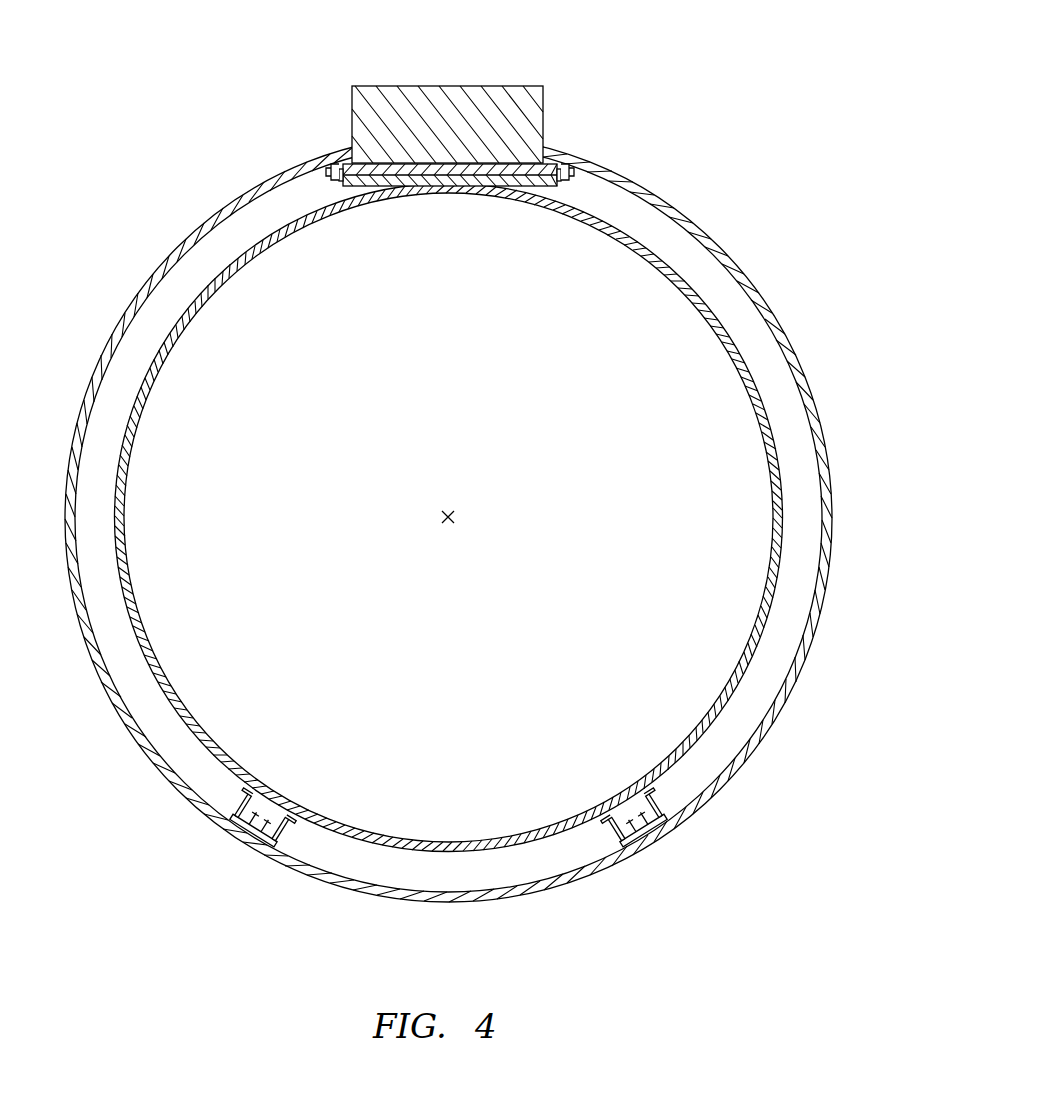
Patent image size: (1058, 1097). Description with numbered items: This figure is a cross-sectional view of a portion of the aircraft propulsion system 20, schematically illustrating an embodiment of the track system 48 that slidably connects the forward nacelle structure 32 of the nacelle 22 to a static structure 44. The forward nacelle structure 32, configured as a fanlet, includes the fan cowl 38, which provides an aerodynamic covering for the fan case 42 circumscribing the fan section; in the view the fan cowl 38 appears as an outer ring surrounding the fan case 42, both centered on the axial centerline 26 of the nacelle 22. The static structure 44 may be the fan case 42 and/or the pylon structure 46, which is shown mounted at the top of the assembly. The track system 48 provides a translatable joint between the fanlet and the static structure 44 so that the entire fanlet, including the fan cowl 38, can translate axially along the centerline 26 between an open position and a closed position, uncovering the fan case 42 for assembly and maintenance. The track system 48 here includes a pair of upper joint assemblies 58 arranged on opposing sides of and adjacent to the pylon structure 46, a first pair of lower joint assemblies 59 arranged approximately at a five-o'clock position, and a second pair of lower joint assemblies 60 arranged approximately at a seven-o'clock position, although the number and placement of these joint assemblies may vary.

The propulsion system 20 is at (686, 105).
The nacelle 22 is at (449, 518).
The forward nacelle structure 32 is at (449, 518).
The fan cowl 38 is at (768, 304).
The fan case 42 is at (750, 383).
The static structure 44 is at (367, 216).
The pylon structure 46 is at (520, 86).
The track system 48 is at (306, 198).
The upper joint assemblies 58 is at (333, 186).
The first pair of lower joint assemblies 59 is at (668, 806).
The second pair of lower joint assemblies 60 is at (232, 806).
The axial centerline 26 is at (456, 517).